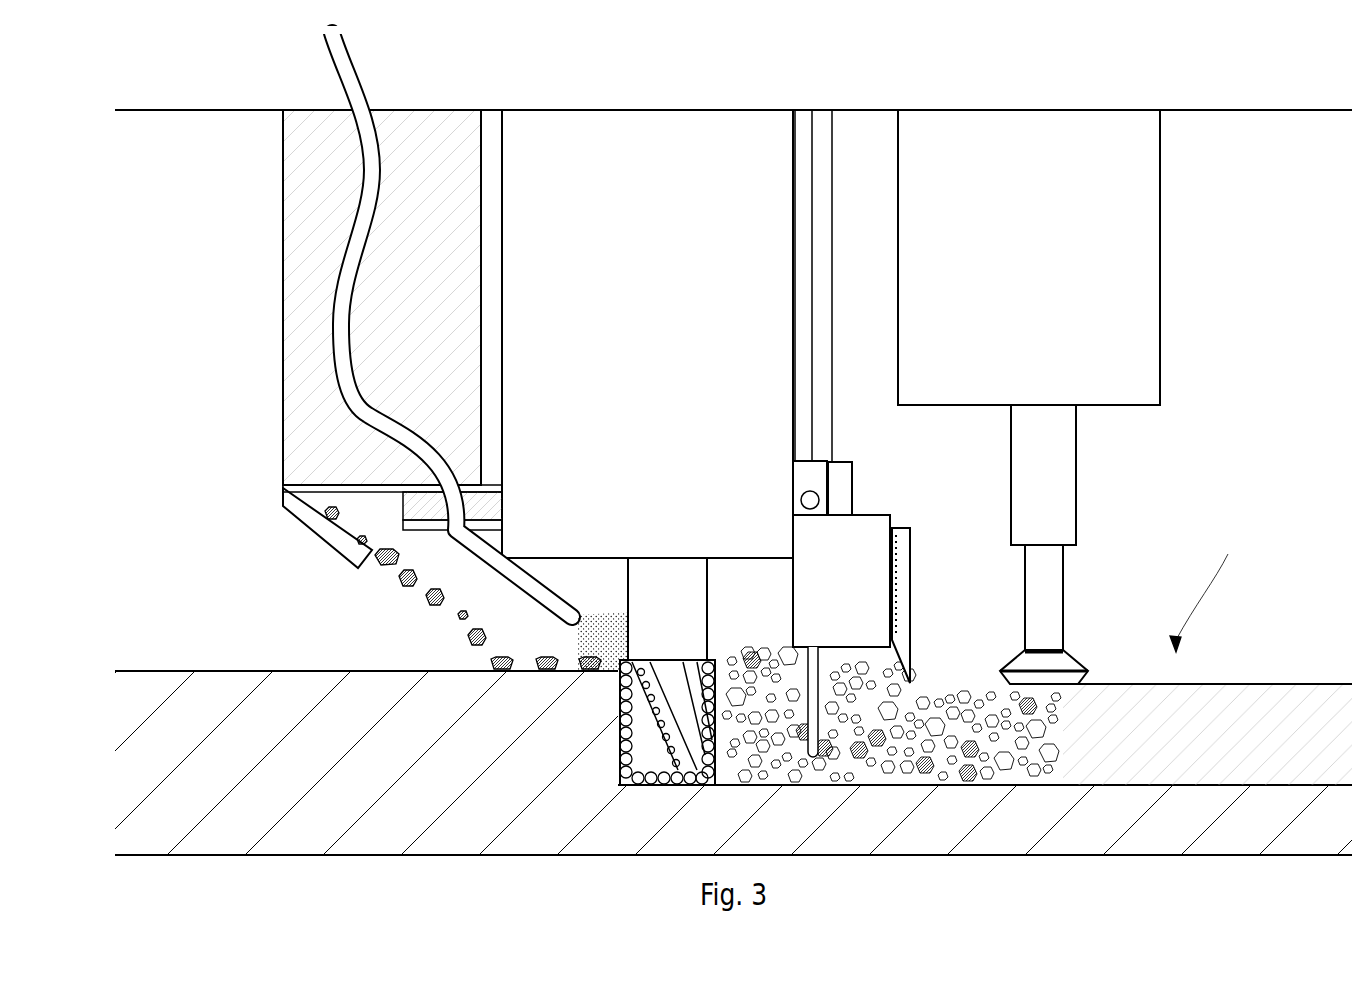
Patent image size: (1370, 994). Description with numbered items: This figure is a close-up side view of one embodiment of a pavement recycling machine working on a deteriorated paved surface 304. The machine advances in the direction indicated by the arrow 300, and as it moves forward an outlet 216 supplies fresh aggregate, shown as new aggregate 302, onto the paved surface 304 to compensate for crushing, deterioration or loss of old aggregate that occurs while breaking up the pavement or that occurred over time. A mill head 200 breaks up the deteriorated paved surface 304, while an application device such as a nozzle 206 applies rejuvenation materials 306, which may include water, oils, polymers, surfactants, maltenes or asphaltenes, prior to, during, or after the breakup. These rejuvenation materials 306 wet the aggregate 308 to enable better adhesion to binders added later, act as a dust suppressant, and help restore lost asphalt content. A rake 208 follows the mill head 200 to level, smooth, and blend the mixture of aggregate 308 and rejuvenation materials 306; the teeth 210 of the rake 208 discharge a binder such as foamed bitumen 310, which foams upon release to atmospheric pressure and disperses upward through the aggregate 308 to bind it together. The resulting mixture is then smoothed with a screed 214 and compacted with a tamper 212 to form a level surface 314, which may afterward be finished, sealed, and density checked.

The arrow 300 is at (755, 70).
The outlet 216 is at (283, 405).
The nozzle 206 is at (572, 597).
The new aggregate 302 is at (410, 590).
The rejuvenation materials 306 is at (613, 615).
The mill head 200 is at (630, 790).
The aggregate 308 is at (740, 637).
The foamed bitumen 310 is at (930, 690).
The rake 208 is at (807, 545).
The screed 214 is at (905, 587).
The teeth 210 is at (850, 790).
The tamper 212 is at (1063, 666).
The level surface 314 is at (1207, 586).
The paved surface 304 is at (325, 762).